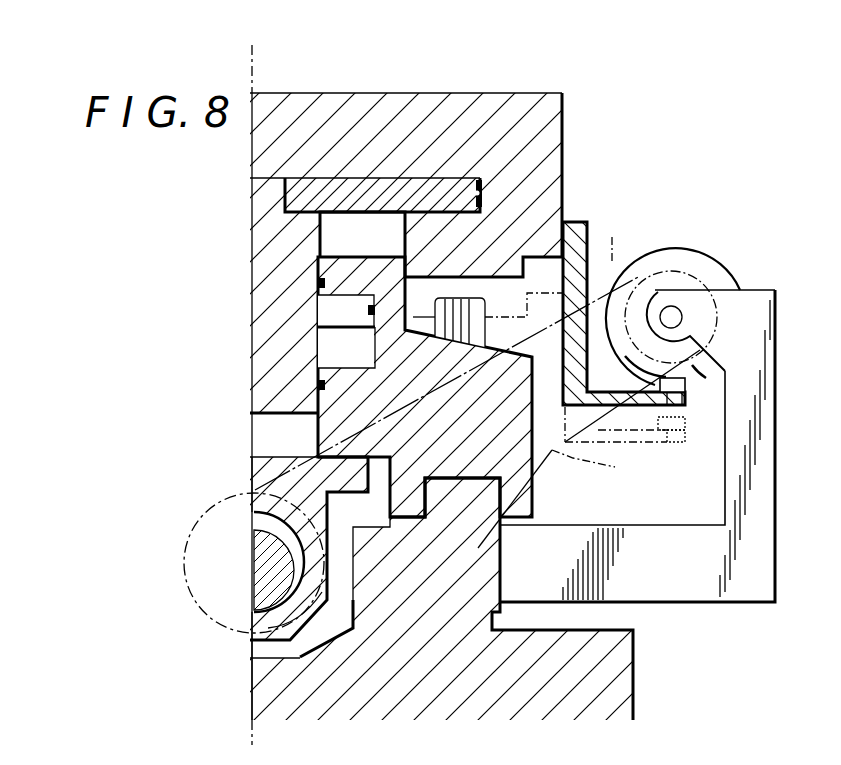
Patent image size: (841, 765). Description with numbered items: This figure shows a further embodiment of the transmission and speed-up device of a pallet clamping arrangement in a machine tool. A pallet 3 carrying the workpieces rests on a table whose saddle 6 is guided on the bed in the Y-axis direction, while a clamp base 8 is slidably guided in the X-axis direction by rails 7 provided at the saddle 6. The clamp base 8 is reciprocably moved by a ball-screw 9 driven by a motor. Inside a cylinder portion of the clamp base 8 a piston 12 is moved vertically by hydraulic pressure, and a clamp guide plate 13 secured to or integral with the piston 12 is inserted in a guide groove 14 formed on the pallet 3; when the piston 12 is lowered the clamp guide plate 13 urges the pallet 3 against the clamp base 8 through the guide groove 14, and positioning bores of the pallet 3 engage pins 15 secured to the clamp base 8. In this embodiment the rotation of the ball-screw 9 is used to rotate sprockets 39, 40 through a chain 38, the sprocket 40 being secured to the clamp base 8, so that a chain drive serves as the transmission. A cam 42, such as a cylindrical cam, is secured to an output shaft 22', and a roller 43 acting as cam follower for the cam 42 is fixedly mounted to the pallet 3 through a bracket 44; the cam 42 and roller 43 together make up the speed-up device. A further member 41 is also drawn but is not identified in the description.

The pallet 3 is at (457, 100).
The saddle 6 is at (620, 672).
The rails 7 is at (487, 505).
The clamp base 8 is at (512, 368).
The ball-screw 9 is at (266, 580).
The piston 12 is at (347, 313).
The clamp guide plate 13 is at (385, 195).
The guide groove 14 is at (483, 183).
The pins 15 is at (458, 300).
The output shaft 22' is at (705, 273).
The chain 38 is at (600, 465).
The sprocket 39 is at (290, 503).
The sprocket 40 is at (447, 347).
The plate 41 is at (757, 438).
The cam 42 is at (668, 247).
The roller 43 is at (685, 391).
The bracket 44 is at (577, 225).